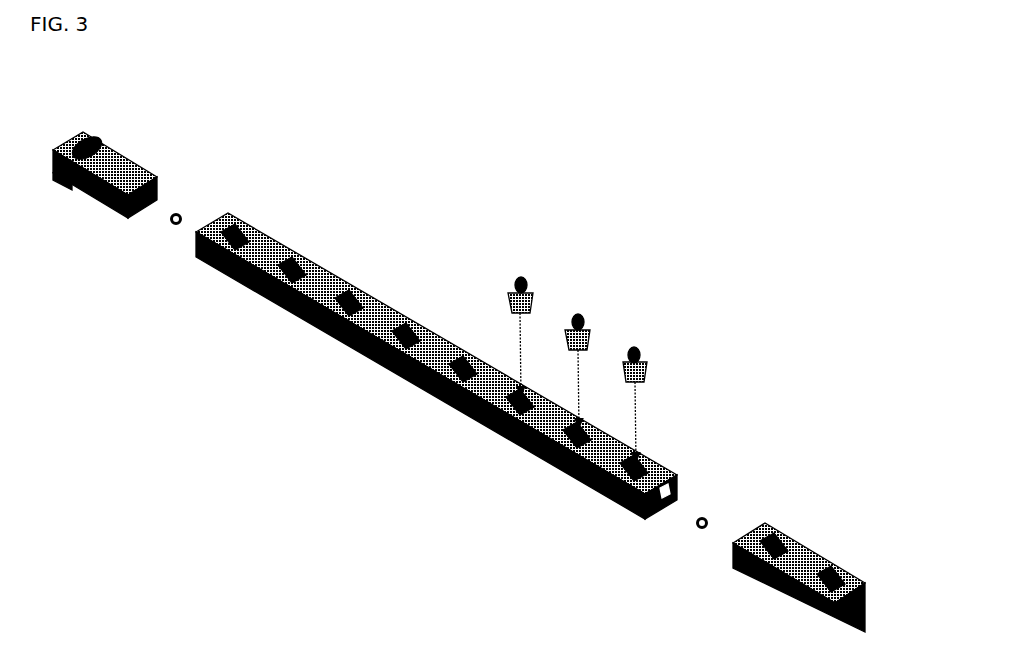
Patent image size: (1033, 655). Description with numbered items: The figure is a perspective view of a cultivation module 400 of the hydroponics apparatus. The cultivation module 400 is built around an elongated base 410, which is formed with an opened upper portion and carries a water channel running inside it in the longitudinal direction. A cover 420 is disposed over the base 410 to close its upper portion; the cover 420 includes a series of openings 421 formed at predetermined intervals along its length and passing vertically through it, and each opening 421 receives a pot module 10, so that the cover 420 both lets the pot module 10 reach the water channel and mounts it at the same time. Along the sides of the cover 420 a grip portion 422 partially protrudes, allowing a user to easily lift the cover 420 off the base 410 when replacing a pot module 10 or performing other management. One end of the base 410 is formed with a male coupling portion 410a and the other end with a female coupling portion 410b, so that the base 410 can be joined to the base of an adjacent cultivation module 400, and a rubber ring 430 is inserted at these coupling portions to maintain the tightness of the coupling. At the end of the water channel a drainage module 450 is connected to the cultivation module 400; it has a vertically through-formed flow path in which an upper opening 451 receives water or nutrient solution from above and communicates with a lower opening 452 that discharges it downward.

The cultivation module 400 is at (468, 344).
The base 410 is at (452, 389).
The male coupling portion 410a is at (735, 525).
The female coupling portion 410b is at (670, 512).
The cover 420 is at (436, 344).
The opening 421 is at (350, 300).
The grip portion 422 is at (298, 296).
The rubber ring 430 is at (181, 217).
The drainage module 450 is at (146, 161).
The upper opening 451 is at (88, 140).
The lower opening 452 is at (68, 190).
The pot module 10 is at (597, 280).